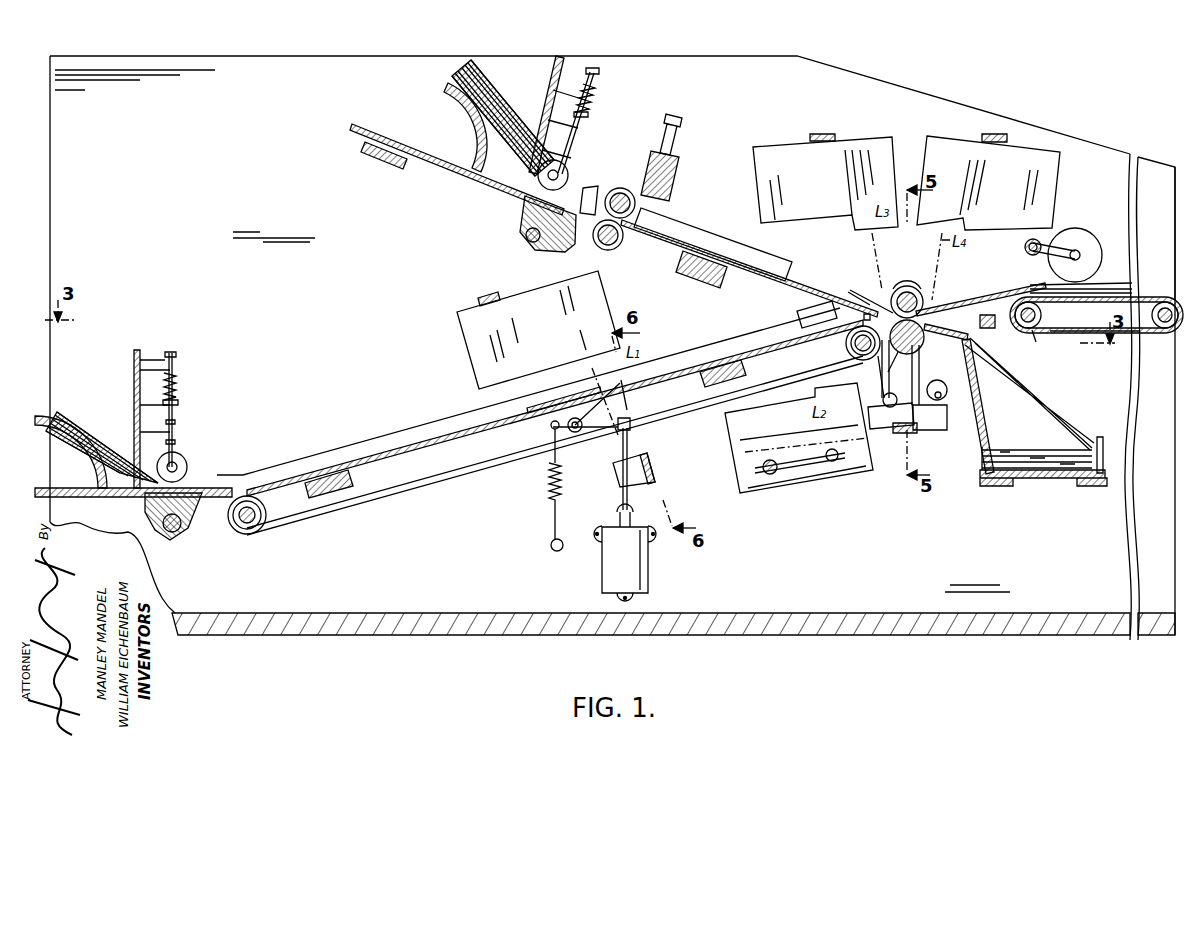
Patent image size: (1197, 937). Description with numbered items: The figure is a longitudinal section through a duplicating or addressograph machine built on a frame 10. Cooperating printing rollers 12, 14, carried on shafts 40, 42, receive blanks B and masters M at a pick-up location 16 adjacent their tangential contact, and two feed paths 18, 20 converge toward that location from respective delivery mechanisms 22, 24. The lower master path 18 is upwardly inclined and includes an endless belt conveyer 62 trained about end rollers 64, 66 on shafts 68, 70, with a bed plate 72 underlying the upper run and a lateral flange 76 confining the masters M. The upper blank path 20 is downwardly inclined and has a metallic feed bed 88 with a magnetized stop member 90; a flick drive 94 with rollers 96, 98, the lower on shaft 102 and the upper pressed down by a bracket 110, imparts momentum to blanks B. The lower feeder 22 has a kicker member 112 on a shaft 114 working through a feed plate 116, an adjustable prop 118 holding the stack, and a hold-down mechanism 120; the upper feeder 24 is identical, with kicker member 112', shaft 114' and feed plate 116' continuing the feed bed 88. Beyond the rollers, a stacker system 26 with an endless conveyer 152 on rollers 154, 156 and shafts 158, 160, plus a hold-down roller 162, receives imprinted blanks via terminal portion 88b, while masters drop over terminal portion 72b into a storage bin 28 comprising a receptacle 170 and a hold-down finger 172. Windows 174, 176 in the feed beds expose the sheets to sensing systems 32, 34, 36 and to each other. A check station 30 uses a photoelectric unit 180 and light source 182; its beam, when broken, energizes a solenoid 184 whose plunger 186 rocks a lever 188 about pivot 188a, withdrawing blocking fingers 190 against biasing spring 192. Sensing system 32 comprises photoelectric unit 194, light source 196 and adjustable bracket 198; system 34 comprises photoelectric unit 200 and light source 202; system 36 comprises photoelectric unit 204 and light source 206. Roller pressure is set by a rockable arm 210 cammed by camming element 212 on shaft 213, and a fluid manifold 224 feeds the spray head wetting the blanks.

The frame 10 is at (219, 62).
The printing roller 12 is at (912, 286).
The printing roller 14 is at (922, 340).
The pick-up location 16 is at (867, 312).
The feed path 18 is at (548, 437).
The feed path 20 is at (690, 230).
The delivery mechanism 22 is at (133, 453).
The delivery mechanism 24 is at (510, 84).
The stacker system 26 is at (1096, 309).
The storage bin 28 is at (1100, 438).
The check station 30 is at (582, 378).
The sensing system 32 is at (799, 449).
The sensing system 34 is at (825, 172).
The sensing system 36 is at (1009, 175).
The shaft 40 is at (906, 285).
The shaft 42 is at (893, 349).
The endless belt conveyer 62 is at (400, 452).
The end roller 64 is at (270, 533).
The end roller 66 is at (848, 348).
The shaft 68 is at (244, 536).
The shaft 70 is at (881, 364).
The bed plate 72 is at (465, 445).
The terminal portion 72b is at (975, 372).
The lateral flange 76 is at (346, 453).
The feed bed 88 is at (735, 278).
The terminal portion 88b is at (1006, 287).
The stop member 90 is at (716, 232).
The flick drive 94 is at (686, 160).
The flick roller 96 is at (609, 251).
The flick roller 98 is at (620, 190).
The shaft 102 is at (618, 243).
The mounting bracket 110 is at (658, 148).
The kicker member 112 is at (179, 522).
The kicker member 112' is at (548, 236).
The shaft 114 is at (174, 539).
The shaft 114' is at (515, 252).
The feed plate 116 is at (133, 507).
The feed plate 116' is at (457, 169).
The adjustable prop 118 is at (44, 448).
The hold-down mechanism 120 is at (180, 393).
The endless conveyer 152 is at (1142, 337).
The supporting roller 154 is at (1043, 318).
The supporting roller 156 is at (1163, 350).
The shaft 158 is at (1036, 332).
The shaft 160 is at (1155, 244).
The hold-down roller 162 is at (1082, 236).
The receptacle 170 is at (990, 436).
The hold-down finger 172 is at (1048, 400).
The window 174 is at (883, 385).
The window 176 is at (870, 290).
The photoelectric unit 180 is at (468, 321).
The light source 182 is at (652, 464).
The solenoid 184 is at (650, 580).
The plunger 186 is at (632, 511).
The rockable lever 188 is at (578, 432).
The pivot 188a is at (563, 432).
The blocking finger 190 is at (628, 405).
The biasing spring 192 is at (550, 484).
The photoelectric unit 194 is at (797, 478).
The light source 196 is at (800, 318).
The adjustable bracket 198 is at (768, 478).
The photoelectric unit 200 is at (778, 148).
The light source 202 is at (876, 429).
The photoelectric unit 204 is at (1055, 165).
The light source 206 is at (935, 430).
The rockable arm 210 is at (920, 368).
The camming element 212 is at (946, 388).
The shaft 213 is at (942, 397).
The fluid manifold 224 is at (860, 298).
The blanks B is at (478, 96).
The masters M is at (96, 412).